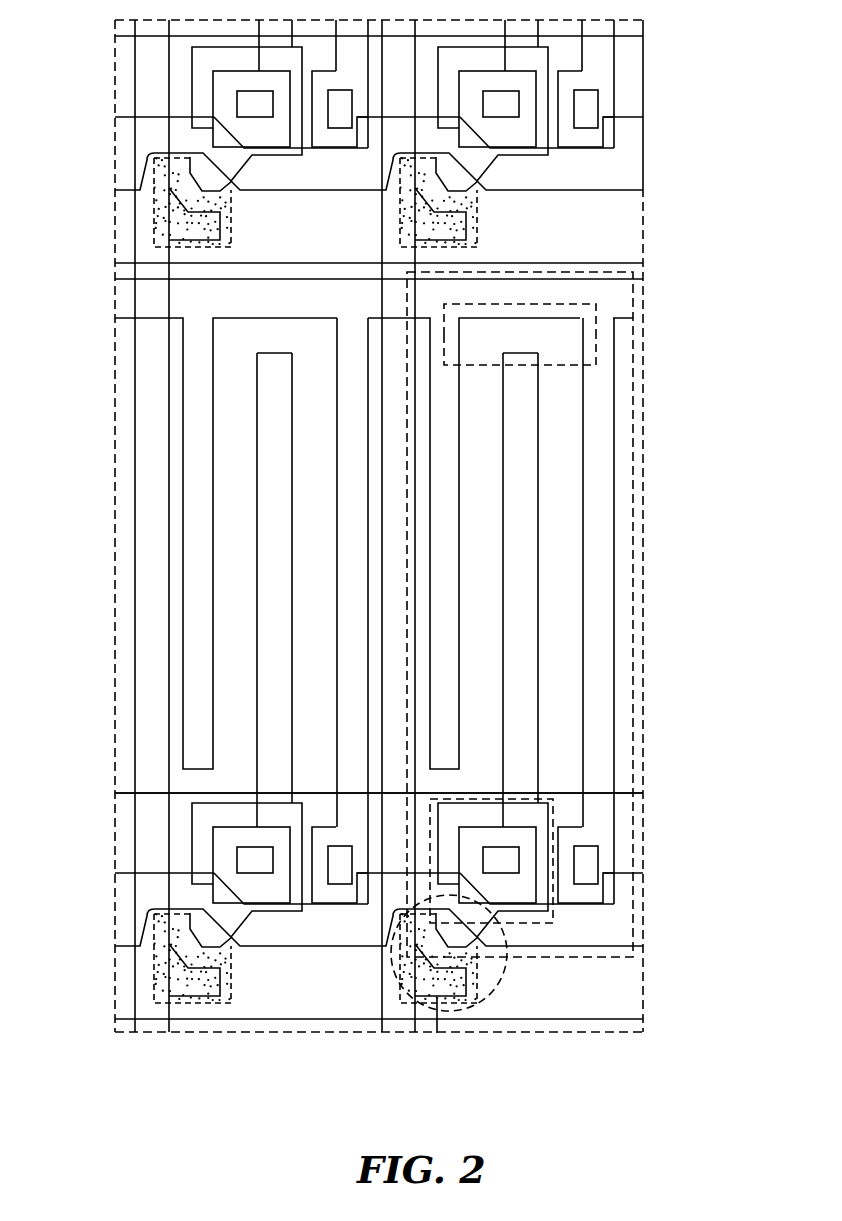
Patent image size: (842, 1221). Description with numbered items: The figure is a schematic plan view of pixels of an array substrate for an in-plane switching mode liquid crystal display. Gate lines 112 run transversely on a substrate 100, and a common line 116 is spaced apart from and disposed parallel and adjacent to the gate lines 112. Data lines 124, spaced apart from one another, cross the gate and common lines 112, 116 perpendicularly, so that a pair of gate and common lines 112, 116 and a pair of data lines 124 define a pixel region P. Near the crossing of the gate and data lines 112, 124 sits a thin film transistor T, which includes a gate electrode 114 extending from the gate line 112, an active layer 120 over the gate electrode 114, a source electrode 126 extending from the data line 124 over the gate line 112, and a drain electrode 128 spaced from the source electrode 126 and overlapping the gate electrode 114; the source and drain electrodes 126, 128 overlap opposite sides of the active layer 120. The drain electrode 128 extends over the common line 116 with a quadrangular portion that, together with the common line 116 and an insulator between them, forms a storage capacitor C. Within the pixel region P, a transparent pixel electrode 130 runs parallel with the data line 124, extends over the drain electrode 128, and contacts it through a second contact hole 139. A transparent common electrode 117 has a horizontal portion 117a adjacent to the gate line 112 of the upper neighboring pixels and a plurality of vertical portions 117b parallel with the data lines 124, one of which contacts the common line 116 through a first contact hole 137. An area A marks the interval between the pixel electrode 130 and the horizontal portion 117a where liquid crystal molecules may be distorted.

The substrate 100 is at (643, 168).
The gate line 112 is at (592, 1023).
The gate electrode 114 is at (392, 905).
The common line 116 is at (627, 792).
The common electrode 117 is at (765, 302).
The horizontal portion 117a is at (627, 303).
The vertical portion 117b is at (603, 355).
The active layer 120 is at (403, 1005).
The data line 124 is at (380, 467).
The source electrode 126 is at (453, 1007).
The drain electrode 128 is at (477, 923).
The pixel electrode 130 is at (535, 712).
The first contact hole 137 is at (594, 860).
The second contact hole 139 is at (516, 857).
The area A is at (588, 366).
The storage capacitor C is at (552, 923).
The pixel region P is at (635, 485).
The thin film transistor T is at (478, 970).